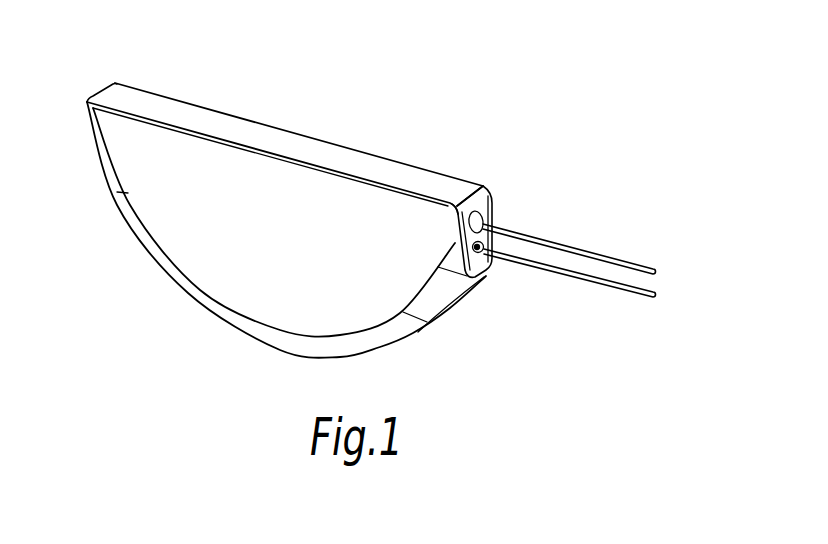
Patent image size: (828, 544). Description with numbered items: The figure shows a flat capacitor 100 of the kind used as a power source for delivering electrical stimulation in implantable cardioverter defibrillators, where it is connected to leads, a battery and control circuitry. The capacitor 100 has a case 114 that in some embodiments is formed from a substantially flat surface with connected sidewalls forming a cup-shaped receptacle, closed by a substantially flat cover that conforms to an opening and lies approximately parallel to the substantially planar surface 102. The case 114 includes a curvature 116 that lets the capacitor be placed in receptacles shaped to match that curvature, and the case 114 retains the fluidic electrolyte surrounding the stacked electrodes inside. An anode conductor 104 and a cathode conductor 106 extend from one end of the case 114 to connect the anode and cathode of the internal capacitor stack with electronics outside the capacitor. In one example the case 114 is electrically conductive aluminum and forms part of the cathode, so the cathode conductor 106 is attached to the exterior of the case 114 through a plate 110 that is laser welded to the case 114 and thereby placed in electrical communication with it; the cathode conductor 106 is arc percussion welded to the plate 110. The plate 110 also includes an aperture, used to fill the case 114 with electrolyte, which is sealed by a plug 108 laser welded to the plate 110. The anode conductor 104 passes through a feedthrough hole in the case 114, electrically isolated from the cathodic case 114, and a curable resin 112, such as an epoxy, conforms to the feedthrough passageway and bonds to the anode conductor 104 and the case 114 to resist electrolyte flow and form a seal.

The flat capacitor 100 is at (530, 60).
The substantially planar surface 102 is at (290, 259).
The anode conductor 104 is at (585, 248).
The cathode conductor 106 is at (648, 299).
The plug 108 is at (485, 262).
The plate 110 is at (487, 268).
The curable resin 112 is at (483, 216).
The case 114 is at (193, 113).
The curvature 116 is at (190, 293).